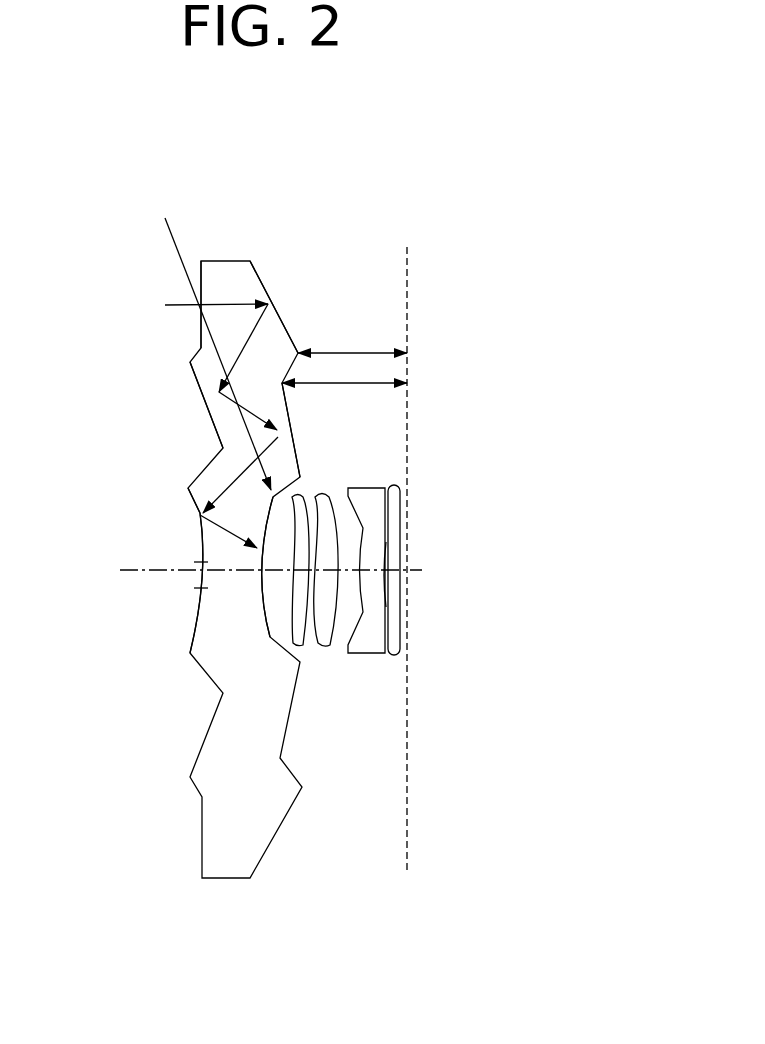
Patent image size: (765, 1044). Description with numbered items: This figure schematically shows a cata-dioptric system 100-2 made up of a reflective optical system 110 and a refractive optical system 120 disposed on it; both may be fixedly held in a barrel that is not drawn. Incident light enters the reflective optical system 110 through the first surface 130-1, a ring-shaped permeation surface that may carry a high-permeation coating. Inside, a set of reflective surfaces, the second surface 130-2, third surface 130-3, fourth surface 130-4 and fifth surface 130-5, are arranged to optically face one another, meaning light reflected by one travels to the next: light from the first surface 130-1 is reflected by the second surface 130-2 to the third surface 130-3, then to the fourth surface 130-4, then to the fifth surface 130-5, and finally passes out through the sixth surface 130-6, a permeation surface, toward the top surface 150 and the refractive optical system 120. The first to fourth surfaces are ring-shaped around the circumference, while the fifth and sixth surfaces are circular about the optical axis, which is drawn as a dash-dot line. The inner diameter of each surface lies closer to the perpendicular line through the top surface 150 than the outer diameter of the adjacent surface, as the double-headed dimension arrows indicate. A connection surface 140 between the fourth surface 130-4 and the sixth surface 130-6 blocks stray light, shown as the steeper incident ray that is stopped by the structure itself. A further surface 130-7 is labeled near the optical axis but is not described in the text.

The cata-dioptric system 100-2 is at (275, 144).
The reflective optical system 110 is at (253, 259).
The refractive optical system 120 is at (356, 660).
The first surface 130-1 is at (200, 327).
The second surface 130-2 is at (298, 335).
The third surface 130-3 is at (212, 428).
The fourth surface 130-4 is at (298, 455).
The fifth surface 130-5 is at (200, 553).
The sixth surface 130-6 is at (188, 650).
The seventh surface 130-7 is at (198, 577).
The connection surface 140 is at (192, 352).
The top surface 150 is at (409, 519).